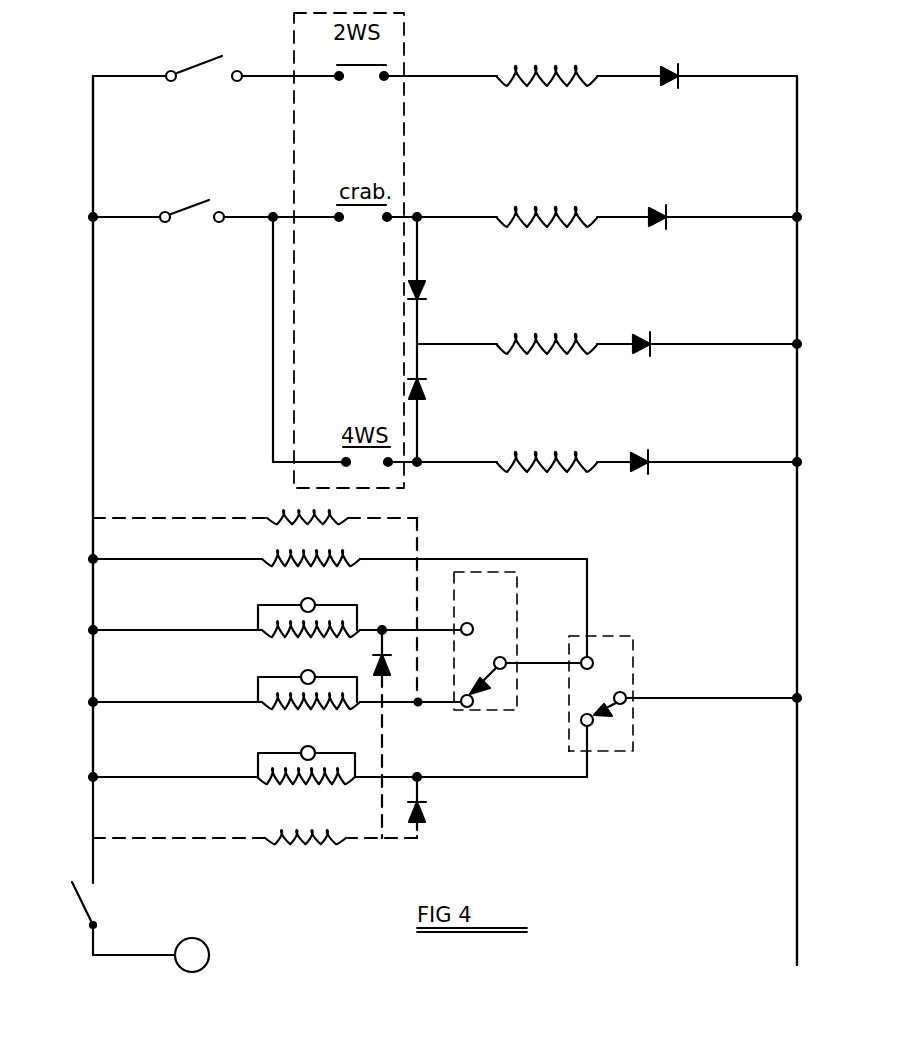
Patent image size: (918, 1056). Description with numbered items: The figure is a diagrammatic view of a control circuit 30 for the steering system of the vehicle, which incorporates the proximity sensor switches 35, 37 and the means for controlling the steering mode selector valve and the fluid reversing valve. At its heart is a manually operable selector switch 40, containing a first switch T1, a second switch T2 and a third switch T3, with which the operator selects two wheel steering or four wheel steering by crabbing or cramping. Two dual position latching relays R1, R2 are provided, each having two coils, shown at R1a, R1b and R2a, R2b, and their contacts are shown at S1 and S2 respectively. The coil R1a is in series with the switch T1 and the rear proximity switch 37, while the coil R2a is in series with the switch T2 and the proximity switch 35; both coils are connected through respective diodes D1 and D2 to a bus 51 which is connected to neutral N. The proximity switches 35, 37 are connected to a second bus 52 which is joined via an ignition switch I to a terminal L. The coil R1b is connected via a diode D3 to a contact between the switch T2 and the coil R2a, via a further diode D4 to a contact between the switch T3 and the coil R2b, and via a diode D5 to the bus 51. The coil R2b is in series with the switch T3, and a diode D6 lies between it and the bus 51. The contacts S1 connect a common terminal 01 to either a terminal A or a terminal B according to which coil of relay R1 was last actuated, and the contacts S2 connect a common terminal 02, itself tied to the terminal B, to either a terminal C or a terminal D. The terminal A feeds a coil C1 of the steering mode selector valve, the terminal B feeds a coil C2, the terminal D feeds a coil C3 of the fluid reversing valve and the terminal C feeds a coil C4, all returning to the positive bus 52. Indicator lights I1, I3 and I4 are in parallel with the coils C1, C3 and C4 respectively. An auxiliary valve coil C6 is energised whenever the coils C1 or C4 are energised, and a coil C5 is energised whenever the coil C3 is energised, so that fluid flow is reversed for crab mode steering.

The control circuit 30 is at (86, 178).
The proximity switch 35 is at (195, 214).
The proximity switch 37 is at (205, 71).
The selector switch 40 is at (404, 42).
The bus 51 is at (797, 302).
The second bus 52 is at (93, 420).
The first switch T1 is at (361, 86).
The second switch T2 is at (363, 227).
The third switch T3 is at (367, 471).
The coil R1a is at (547, 61).
The coil R2a is at (547, 202).
The coil R1b is at (556, 330).
The coil R2b is at (556, 448).
The diode D1 is at (668, 88).
The diode D2 is at (656, 229).
The diode D3 is at (440, 285).
The further diode D4 is at (435, 401).
The diode D5 is at (640, 356).
The diode D6 is at (638, 474).
The coil C1 is at (224, 795).
The coil C2 is at (226, 574).
The coil C3 is at (226, 721).
The coil C4 is at (226, 648).
The coil C5 is at (338, 514).
The coil C6 is at (255, 860).
The indicator light I1 is at (314, 748).
The indicator light I3 is at (300, 675).
The indicator light I4 is at (314, 600).
The dual position latching relay R1 is at (633, 674).
The dual position latching relay R2 is at (454, 690).
The contacts S1 is at (586, 688).
The contacts S2 is at (486, 648).
The common terminal 01 is at (624, 704).
The common terminal 02 is at (500, 670).
The terminal A is at (592, 726).
The terminal B is at (591, 657).
The terminal C is at (467, 623).
The terminal D is at (467, 707).
The ignition switch I is at (88, 911).
The terminal L is at (192, 955).
The neutral N is at (796, 850).